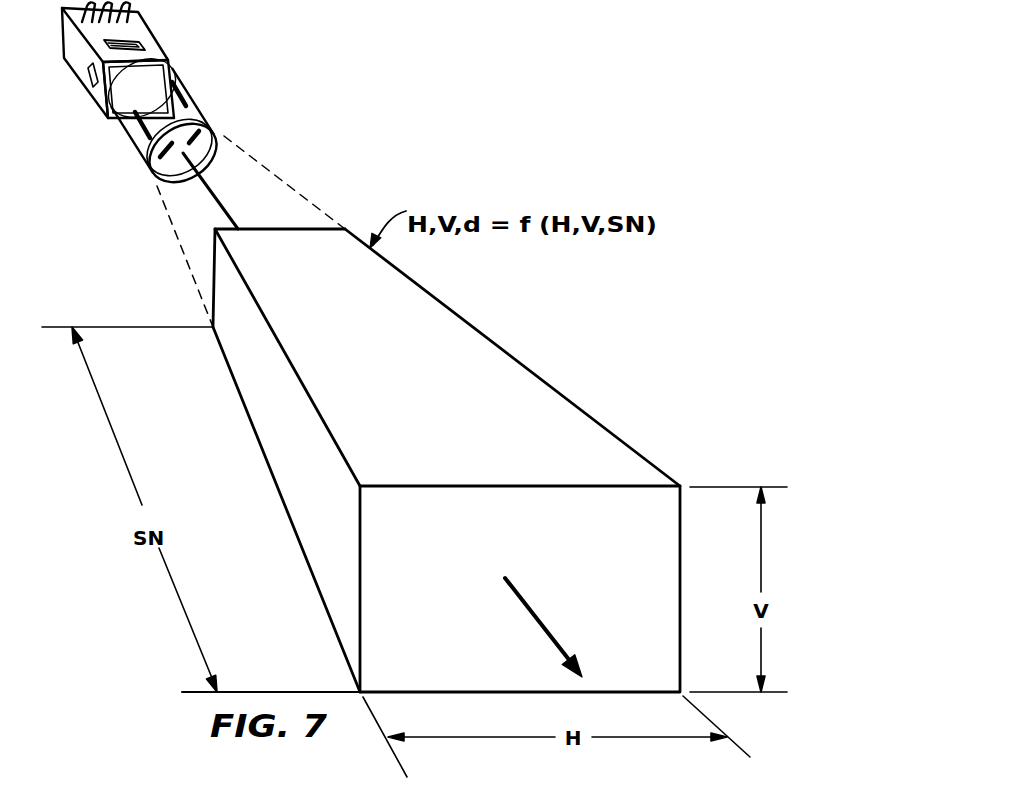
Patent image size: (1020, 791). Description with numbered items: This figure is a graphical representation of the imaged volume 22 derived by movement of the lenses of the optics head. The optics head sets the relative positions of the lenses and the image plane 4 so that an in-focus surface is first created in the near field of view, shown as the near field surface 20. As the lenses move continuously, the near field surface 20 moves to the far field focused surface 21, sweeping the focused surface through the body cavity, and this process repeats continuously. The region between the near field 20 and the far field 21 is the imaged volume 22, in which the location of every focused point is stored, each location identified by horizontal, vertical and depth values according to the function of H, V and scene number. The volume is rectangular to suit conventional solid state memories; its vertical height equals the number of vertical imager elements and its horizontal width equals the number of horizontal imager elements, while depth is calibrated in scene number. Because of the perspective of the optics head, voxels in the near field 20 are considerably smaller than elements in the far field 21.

The image plane 4 is at (207, 131).
The near field focused surface 20 is at (292, 229).
The far field focused surface 21 is at (674, 651).
The imaged volume 22 is at (459, 318).